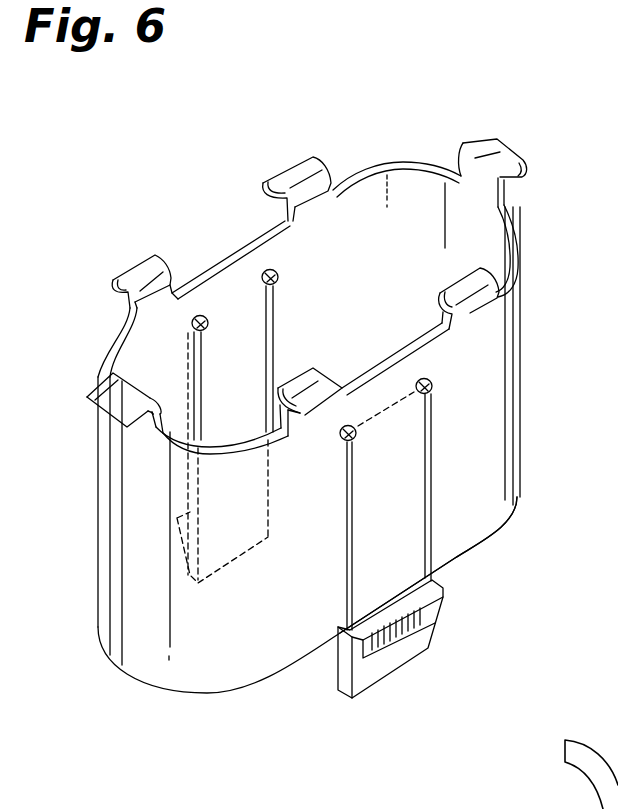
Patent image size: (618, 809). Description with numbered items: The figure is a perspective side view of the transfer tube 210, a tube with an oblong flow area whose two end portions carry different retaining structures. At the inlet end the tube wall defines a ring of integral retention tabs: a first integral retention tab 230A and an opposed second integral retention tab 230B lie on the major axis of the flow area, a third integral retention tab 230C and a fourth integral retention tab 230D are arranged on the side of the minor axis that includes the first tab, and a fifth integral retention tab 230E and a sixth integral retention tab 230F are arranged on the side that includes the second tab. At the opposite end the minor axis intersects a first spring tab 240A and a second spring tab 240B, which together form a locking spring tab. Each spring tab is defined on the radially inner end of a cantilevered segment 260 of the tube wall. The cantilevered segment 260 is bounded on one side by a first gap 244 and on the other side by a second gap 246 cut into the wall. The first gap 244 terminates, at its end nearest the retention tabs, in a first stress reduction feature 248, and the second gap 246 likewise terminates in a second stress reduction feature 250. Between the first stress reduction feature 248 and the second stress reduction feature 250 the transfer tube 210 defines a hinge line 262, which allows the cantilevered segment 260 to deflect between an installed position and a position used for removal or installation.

The transfer tube 210 is at (188, 194).
The first integral retention tab 230A is at (97, 391).
The second integral retention tab 230B is at (503, 141).
The third integral retention tab 230C is at (318, 378).
The fourth integral retention tab 230D is at (125, 271).
The fifth integral retention tab 230E is at (453, 278).
The sixth integral retention tab 230F is at (293, 165).
The first spring tab 240A is at (361, 710).
The second spring tab 240B is at (234, 580).
The first gap 244 is at (348, 544).
The second gap 246 is at (432, 465).
The first stress reduction feature 248 is at (342, 446).
The second stress reduction feature 250 is at (433, 380).
The cantilevered segment 260 is at (403, 523).
The hinge line 262 is at (375, 420).